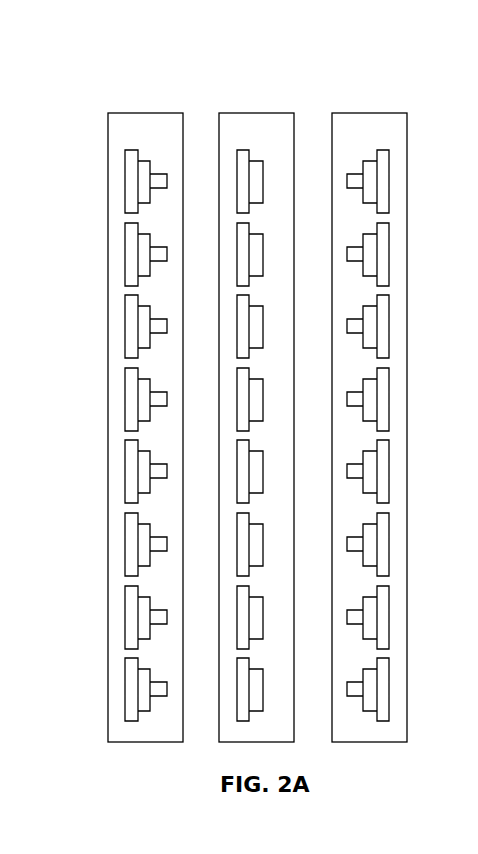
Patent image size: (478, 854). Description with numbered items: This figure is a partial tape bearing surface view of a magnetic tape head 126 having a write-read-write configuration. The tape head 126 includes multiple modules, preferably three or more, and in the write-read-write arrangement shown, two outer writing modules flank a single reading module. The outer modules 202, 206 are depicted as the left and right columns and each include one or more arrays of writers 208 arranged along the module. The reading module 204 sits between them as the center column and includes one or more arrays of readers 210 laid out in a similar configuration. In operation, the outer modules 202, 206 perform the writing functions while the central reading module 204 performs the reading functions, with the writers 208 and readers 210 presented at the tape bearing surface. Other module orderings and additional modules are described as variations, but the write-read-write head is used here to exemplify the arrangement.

The tape head 126 is at (82, 88).
The outer writing module 202 is at (132, 104).
The reading module 204 is at (252, 105).
The outer writing module 206 is at (354, 105).
The writers 208 is at (263, 325).
The readers 210 is at (389, 397).